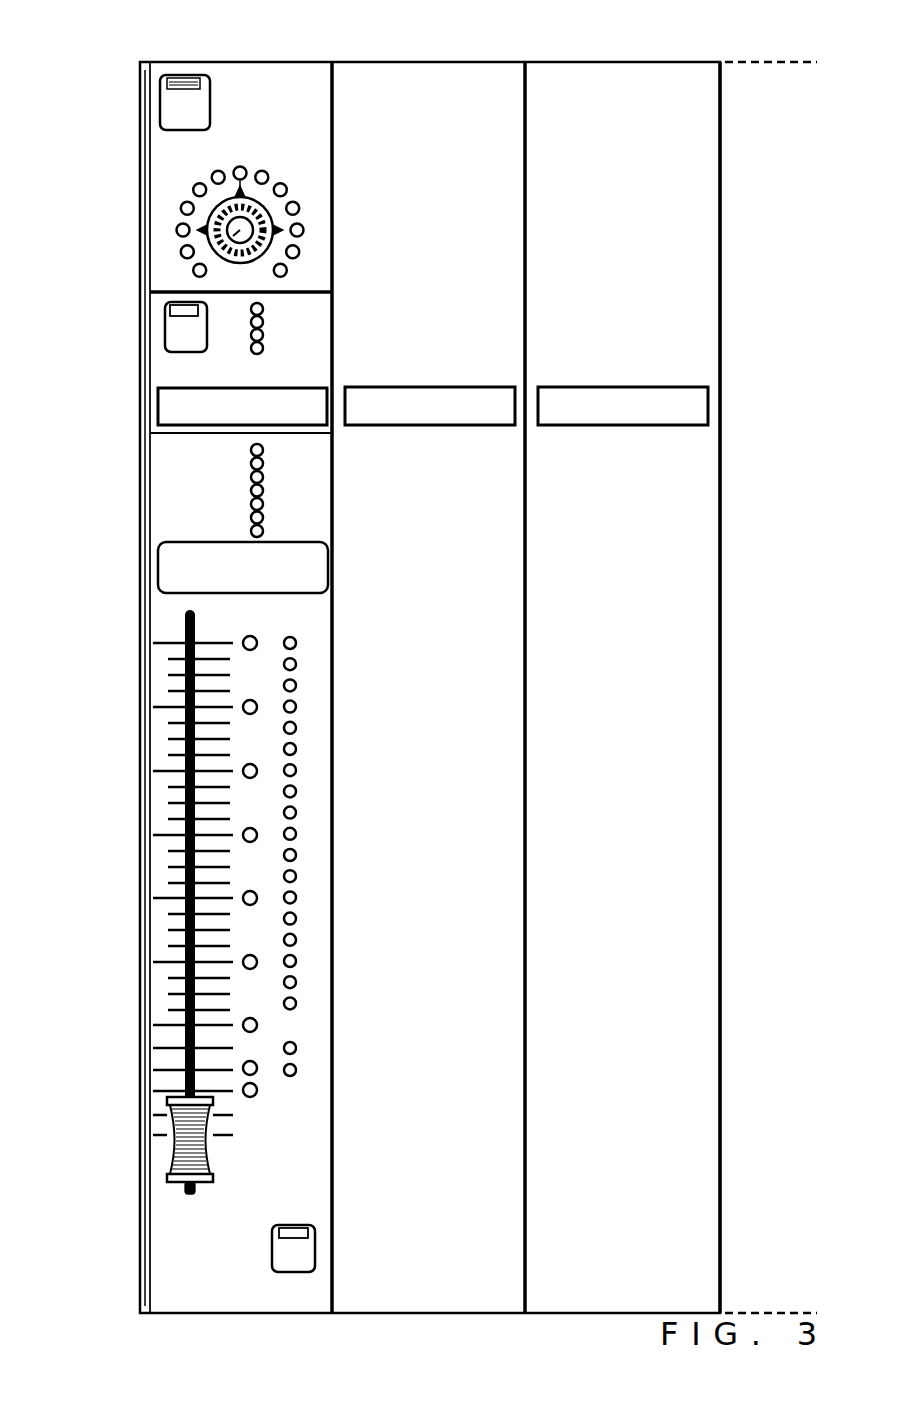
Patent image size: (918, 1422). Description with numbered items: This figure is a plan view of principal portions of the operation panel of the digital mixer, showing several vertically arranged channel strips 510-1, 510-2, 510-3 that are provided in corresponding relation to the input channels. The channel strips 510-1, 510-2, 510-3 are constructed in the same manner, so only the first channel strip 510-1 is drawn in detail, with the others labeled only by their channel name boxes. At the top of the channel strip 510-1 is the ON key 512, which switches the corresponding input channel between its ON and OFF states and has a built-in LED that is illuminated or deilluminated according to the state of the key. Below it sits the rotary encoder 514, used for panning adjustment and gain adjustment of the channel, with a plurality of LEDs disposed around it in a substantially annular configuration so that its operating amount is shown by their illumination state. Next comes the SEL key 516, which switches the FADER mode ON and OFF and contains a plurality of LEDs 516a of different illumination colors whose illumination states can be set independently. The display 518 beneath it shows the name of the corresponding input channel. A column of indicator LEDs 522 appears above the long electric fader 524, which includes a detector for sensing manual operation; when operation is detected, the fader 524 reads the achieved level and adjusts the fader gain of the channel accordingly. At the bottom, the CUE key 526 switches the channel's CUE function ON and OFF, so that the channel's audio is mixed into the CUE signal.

The channel strip 510-1 is at (272, 82).
The channel strip 510-2 is at (463, 82).
The channel strip 510-3 is at (655, 80).
The ON key 512 is at (172, 123).
The rotary encoder 514 is at (240, 231).
The SEL key 516 is at (172, 338).
The LEDs 516a is at (172, 310).
The display 518 is at (163, 402).
The LED level indicator 522 is at (257, 512).
The electric fader 524 is at (180, 1143).
The CUE key 526 is at (280, 1252).